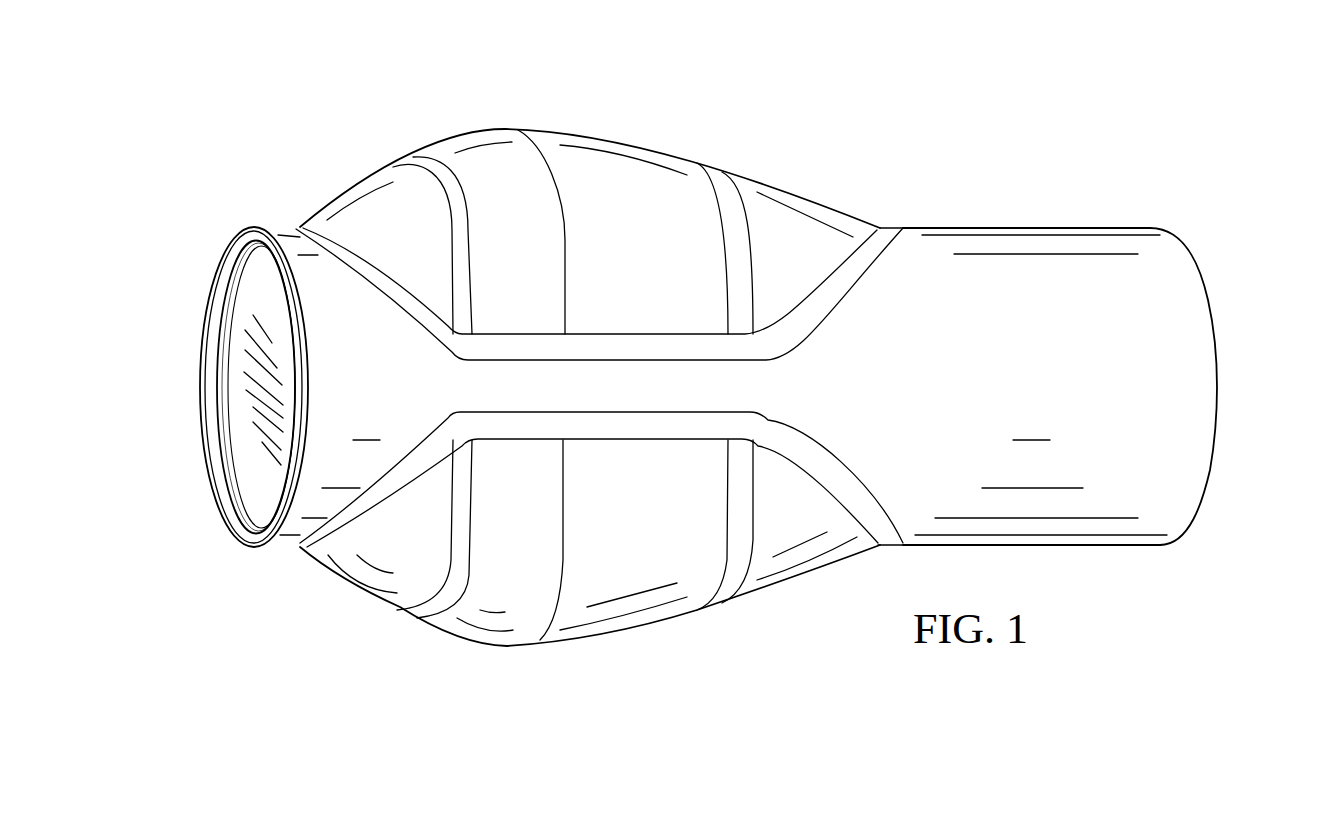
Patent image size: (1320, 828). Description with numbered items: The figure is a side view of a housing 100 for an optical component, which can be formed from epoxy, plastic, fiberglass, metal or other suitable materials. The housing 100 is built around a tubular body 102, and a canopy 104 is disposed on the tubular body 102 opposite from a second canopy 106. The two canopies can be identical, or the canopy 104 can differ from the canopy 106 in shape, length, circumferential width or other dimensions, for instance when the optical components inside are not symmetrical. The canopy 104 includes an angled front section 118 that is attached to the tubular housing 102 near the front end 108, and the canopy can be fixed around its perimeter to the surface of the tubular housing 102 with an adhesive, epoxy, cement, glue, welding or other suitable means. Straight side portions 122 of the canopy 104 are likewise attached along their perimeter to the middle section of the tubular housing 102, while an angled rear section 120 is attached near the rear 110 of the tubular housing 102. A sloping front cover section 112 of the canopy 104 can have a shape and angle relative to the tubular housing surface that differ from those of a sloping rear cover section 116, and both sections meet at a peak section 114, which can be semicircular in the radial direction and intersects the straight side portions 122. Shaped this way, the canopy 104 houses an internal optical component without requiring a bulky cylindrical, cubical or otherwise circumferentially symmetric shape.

The housing 100 is at (248, 133).
The tubular body 102 is at (1073, 393).
The canopy 104 is at (663, 258).
The canopy 106 is at (665, 528).
The front end 108 is at (204, 456).
The rear 110 is at (1212, 460).
The sloping front cover section 112 is at (367, 180).
The peak section 114 is at (488, 130).
The sloping rear cover section 116 is at (783, 188).
The angled front section 118 is at (412, 325).
The angled rear section 120 is at (830, 317).
The straight side portions 122 is at (581, 362).